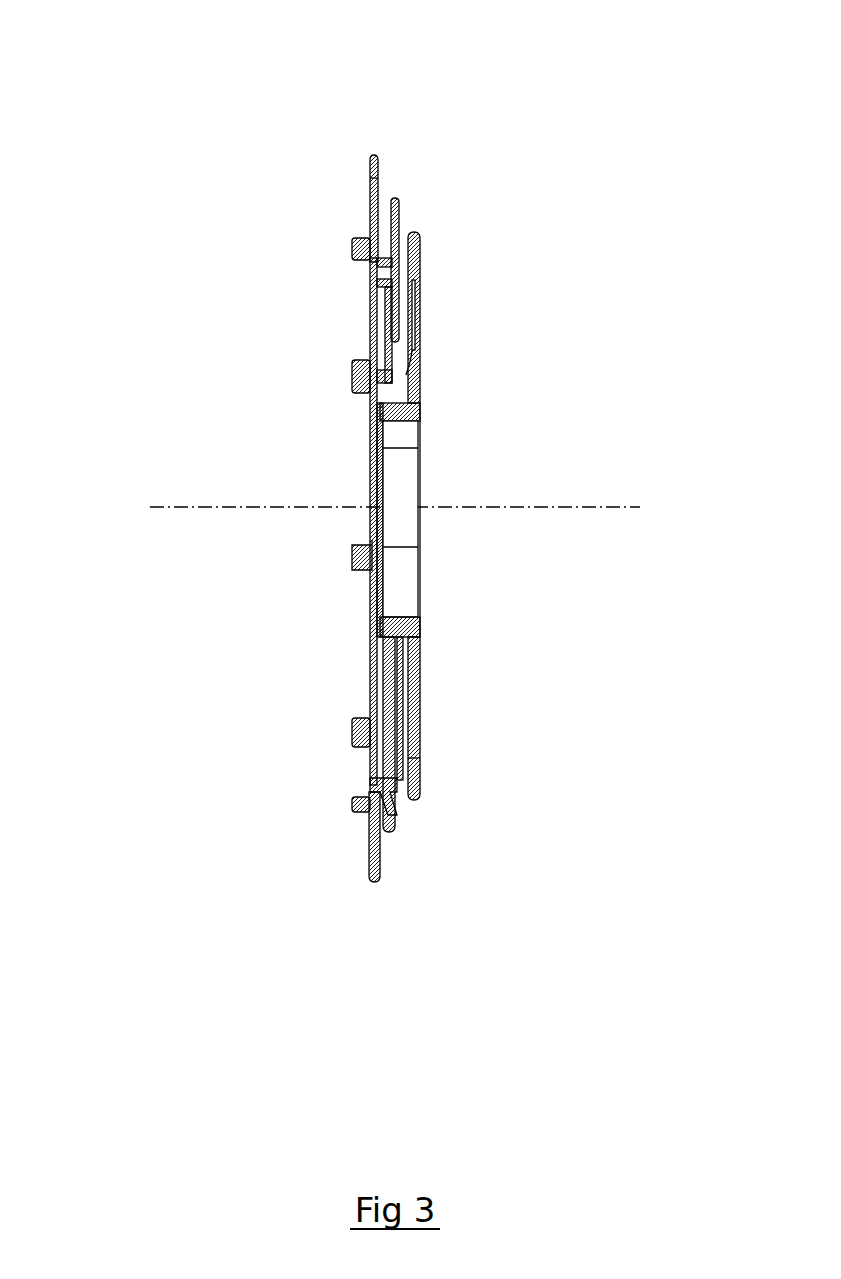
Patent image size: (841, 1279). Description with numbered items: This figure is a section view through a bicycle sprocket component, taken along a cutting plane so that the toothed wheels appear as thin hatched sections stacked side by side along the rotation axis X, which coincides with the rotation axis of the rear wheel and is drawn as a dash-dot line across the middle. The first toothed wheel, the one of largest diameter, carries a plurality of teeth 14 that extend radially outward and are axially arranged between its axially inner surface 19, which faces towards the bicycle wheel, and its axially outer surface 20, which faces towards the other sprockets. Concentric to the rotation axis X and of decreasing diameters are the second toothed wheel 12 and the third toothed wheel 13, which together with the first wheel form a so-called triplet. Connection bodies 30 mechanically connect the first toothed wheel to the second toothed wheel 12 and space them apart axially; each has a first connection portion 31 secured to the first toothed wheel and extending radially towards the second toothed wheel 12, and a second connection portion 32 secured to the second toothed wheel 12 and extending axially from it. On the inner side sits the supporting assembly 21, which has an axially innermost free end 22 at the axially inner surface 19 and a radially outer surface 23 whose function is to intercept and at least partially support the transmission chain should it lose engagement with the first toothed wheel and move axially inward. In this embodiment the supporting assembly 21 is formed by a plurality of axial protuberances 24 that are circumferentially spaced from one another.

The second toothed wheel 12 is at (396, 749).
The third toothed wheel 13 is at (415, 323).
The teeth 14 is at (360, 158).
The axially inner surface 19 is at (370, 303).
The axially outer surface 20 is at (383, 232).
The supporting assembly 21 is at (355, 232).
The axially innermost free end 22 is at (355, 248).
The radially outer surface 23 is at (370, 808).
The axial protuberances 24 is at (358, 558).
The connection bodies 30 is at (384, 708).
The first connection portion 31 is at (396, 812).
The second connection portion 32 is at (368, 780).
The rotation axis X is at (162, 510).